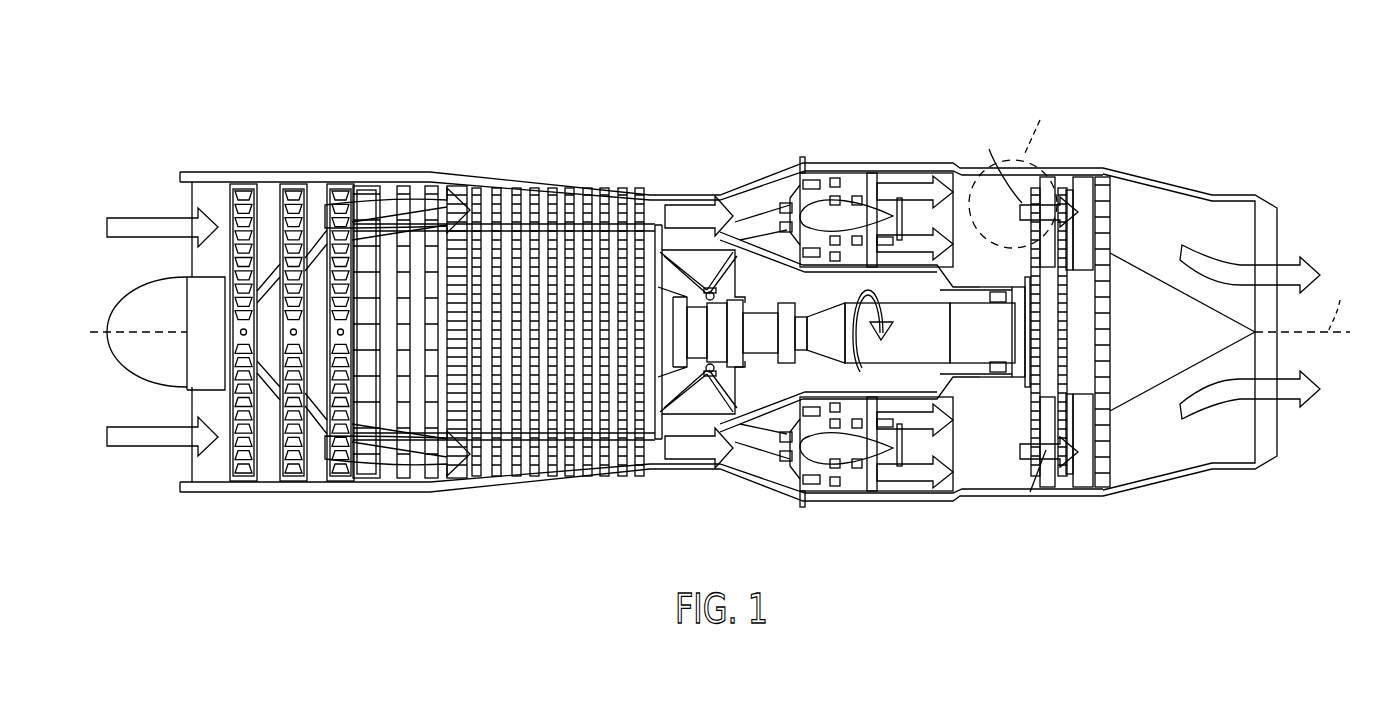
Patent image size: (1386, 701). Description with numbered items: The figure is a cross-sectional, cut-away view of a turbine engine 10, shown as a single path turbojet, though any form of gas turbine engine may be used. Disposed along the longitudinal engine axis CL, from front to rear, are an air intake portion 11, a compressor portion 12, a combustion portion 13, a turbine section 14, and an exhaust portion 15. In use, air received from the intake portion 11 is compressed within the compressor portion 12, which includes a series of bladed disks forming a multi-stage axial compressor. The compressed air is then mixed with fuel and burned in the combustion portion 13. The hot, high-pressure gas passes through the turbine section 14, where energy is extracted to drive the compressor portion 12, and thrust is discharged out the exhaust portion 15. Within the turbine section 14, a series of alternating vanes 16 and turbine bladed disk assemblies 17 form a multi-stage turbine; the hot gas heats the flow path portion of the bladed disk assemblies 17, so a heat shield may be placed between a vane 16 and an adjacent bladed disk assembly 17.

The turbine engine 10 is at (1222, 100).
The air intake portion 11 is at (186, 477).
The compressor portion 12 is at (512, 263).
The combustion portion 13 is at (748, 461).
The turbine section 14 is at (1127, 439).
The exhaust portion 15 is at (1290, 357).
The vane 16 is at (1050, 193).
The turbine bladed disk assembly 17 is at (1075, 192).